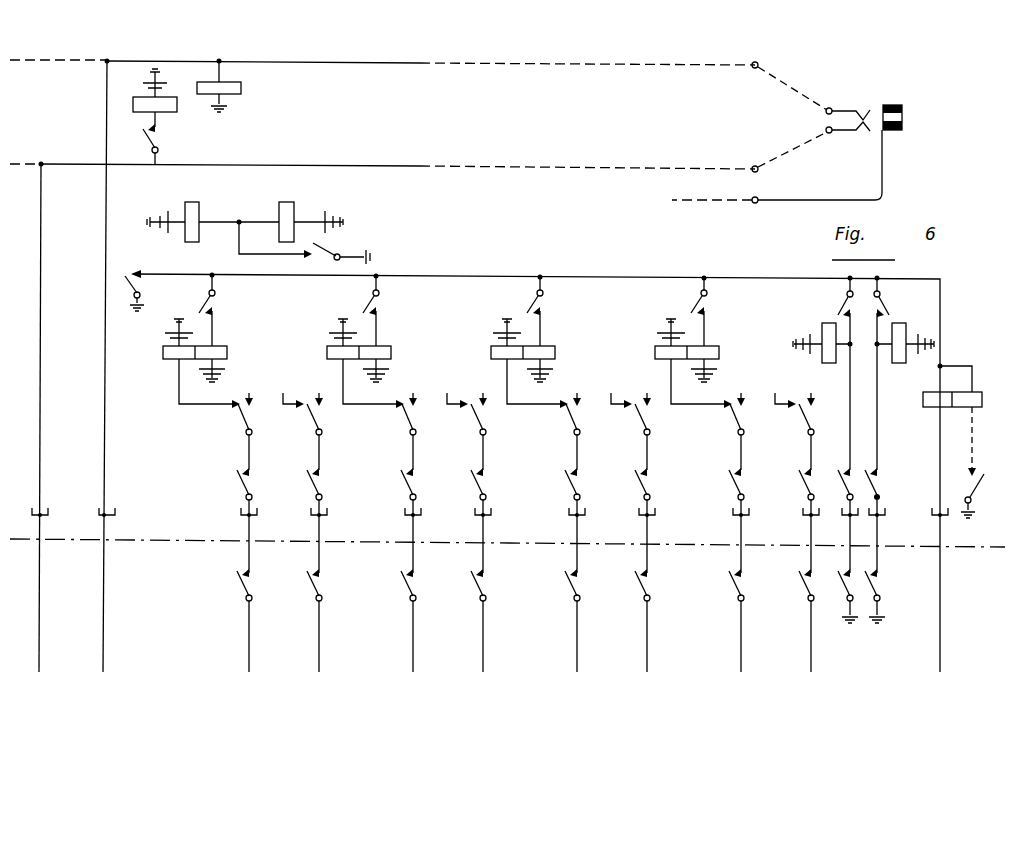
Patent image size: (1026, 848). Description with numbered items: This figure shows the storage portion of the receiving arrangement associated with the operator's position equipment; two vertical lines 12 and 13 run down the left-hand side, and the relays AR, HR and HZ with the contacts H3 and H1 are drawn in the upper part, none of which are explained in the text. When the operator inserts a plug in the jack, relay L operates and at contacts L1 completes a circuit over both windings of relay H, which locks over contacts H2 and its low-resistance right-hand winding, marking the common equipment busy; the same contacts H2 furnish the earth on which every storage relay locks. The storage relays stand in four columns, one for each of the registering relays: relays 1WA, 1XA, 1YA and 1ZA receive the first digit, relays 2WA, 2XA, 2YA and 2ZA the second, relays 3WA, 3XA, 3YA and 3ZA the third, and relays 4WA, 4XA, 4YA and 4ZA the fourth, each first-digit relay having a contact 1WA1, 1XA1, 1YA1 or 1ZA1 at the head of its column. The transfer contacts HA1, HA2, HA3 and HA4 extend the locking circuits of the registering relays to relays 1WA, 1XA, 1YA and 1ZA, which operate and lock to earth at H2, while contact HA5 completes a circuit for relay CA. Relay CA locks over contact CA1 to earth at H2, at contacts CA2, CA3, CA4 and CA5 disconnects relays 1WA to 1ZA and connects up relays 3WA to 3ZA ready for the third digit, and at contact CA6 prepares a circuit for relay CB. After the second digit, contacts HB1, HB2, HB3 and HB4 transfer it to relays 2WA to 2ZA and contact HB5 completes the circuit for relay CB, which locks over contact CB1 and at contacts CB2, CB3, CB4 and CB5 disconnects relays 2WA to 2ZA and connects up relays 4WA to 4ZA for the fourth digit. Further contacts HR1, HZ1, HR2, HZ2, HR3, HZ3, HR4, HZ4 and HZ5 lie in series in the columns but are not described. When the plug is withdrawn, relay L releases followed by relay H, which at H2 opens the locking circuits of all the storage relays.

The supply line 12 is at (104, 237).
The supply line 13 is at (41, 237).
The relay AR is at (131, 106).
The relay L is at (258, 86).
The contact H3 is at (161, 138).
The contacts H2 of relay H H2 is at (525, 462).
The contact H1 is at (304, 242).
The relay HR is at (226, 200).
The relay HZ is at (280, 200).
The contact 1WA1 is at (225, 310).
The storage relay 1WA is at (162, 353).
The storage relay 2WA is at (287, 390).
The storage relay 3WA is at (249, 389).
The storage relay 4WA is at (319, 389).
The contact CA2 of relay CA CA2 is at (215, 414).
The contact CB2 of relay CB CB2 is at (297, 437).
The contact HR1 is at (229, 519).
The contact HZ1 is at (299, 519).
The contact HA1 of relay HA HA1 is at (227, 619).
The contact HB1 of relay HB HB1 is at (297, 619).
The contact 1XA1 is at (389, 310).
The storage relay 1XA is at (326, 353).
The storage relay 2XA is at (451, 390).
The storage relay 3XA is at (413, 389).
The storage relay 4XA is at (483, 389).
The contact CA3 of relay CA CA3 is at (379, 414).
The contact CB3 of relay CB CB3 is at (461, 437).
The contact HR2 is at (393, 519).
The contact HZ2 is at (463, 519).
The contact HA2 of relay HA HA2 is at (391, 619).
The contact HB2 of relay HB HB2 is at (461, 619).
The contact 1YA1 is at (553, 311).
The storage relay 1YA is at (490, 353).
The storage relay 2YA is at (615, 390).
The storage relay 3YA is at (577, 389).
The storage relay 4YA is at (647, 389).
The contact CA4 of relay CA CA4 is at (543, 414).
The contact CB4 of relay CB CB4 is at (625, 437).
The contact HR3 is at (557, 519).
The contact HZ3 is at (627, 519).
The contact HA3 of relay HA HA3 is at (555, 619).
The contact HB3 of relay HB HB3 is at (625, 619).
The contact 1ZA1 is at (717, 311).
The storage relay 1ZA is at (654, 353).
The storage relay 2ZA is at (779, 390).
The storage relay 3ZA is at (741, 389).
The storage relay 4ZA is at (811, 389).
The contact CA5 of relay CA CA5 is at (707, 414).
The contact CB5 is at (793, 437).
The contact HR4 is at (721, 519).
The contact HZ4 is at (791, 519).
The contact HA4 of relay HA HA4 is at (719, 619).
The contact HB4 of relay HB HB4 is at (789, 619).
The contact CB1 of relay CB CB1 is at (832, 373).
The contact CA1 of relay CA CA1 is at (894, 373).
The relay CB is at (806, 320).
The relay CA is at (937, 320).
The relay H is at (1000, 402).
The contacts L1 of relay L L1 is at (964, 462).
The contact CA6 of relay CA CA6 is at (837, 514).
The contact HZ5 is at (886, 519).
The contact HB5 of relay HB HB5 is at (837, 591).
The contact HA5 of relay HA HA5 is at (886, 595).